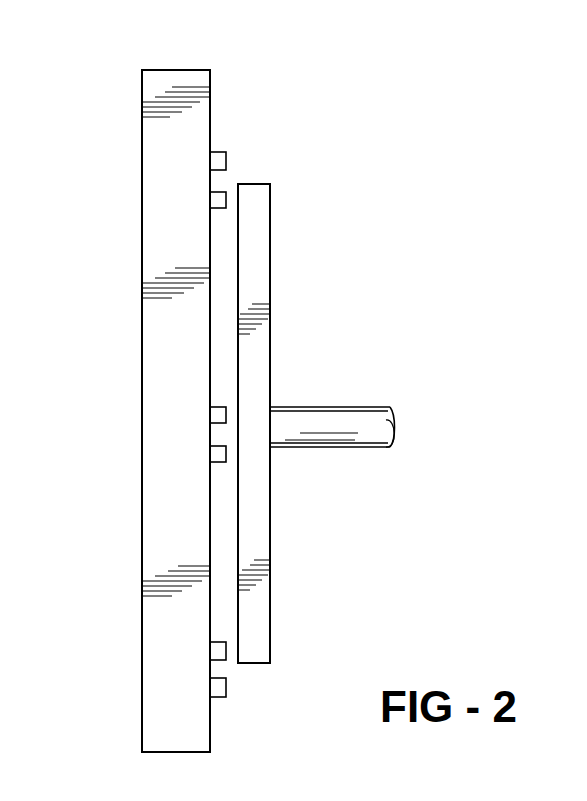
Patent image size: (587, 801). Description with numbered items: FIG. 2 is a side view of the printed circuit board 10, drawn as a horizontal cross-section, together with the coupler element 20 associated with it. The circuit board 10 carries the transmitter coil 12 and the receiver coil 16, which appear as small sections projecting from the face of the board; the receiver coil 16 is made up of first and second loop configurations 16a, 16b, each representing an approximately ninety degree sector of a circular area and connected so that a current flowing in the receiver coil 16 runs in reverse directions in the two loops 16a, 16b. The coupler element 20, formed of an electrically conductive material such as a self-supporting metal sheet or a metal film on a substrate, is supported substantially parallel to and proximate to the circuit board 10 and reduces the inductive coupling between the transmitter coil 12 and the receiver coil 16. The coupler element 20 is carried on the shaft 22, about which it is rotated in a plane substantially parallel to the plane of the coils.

The circuit board 10 is at (150, 146).
The transmitter coil 12 is at (225, 158).
The receiver coil 16 is at (222, 200).
The first loop configuration 16a is at (220, 417).
The second loop configuration 16b is at (220, 455).
The coupler element 20 is at (264, 290).
The shaft 22 is at (370, 416).